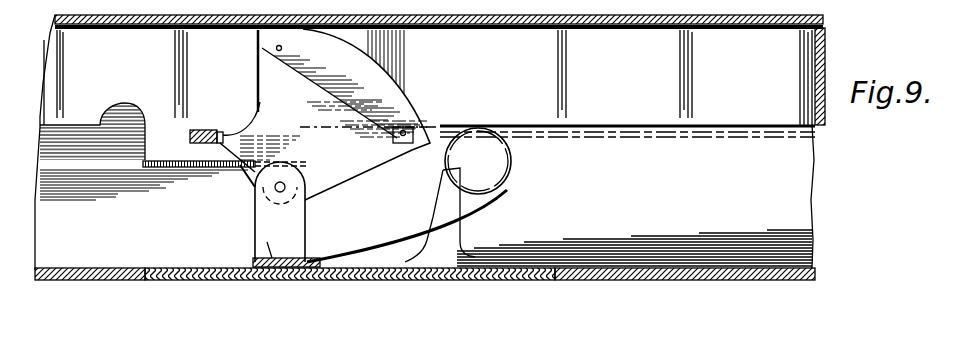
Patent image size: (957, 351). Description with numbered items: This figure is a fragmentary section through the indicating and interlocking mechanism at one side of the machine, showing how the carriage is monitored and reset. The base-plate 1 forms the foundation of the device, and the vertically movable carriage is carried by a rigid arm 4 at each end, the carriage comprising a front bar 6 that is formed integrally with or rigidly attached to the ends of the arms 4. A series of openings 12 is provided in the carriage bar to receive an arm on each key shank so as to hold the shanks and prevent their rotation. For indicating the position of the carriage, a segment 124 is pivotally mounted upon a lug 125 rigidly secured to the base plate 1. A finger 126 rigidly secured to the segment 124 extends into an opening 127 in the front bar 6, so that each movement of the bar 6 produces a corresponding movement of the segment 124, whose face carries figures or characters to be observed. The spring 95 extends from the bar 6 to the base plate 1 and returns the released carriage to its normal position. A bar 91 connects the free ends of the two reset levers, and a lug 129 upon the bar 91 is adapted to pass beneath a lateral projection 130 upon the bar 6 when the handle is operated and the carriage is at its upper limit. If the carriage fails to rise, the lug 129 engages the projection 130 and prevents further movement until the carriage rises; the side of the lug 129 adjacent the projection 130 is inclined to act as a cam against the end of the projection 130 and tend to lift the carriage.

The base-plate 1 is at (653, 270).
The rigid arm 4 is at (822, 113).
The front bar 6 is at (810, 75).
The second series of openings 12 is at (355, 15).
The bar 91 is at (540, 255).
The spring 95 is at (512, 178).
The segment 124 is at (333, 153).
The lug 125 is at (258, 266).
The finger 126 is at (208, 130).
The opening 127 is at (197, 143).
The lug 129 is at (460, 233).
The lateral projection 130 is at (150, 168).